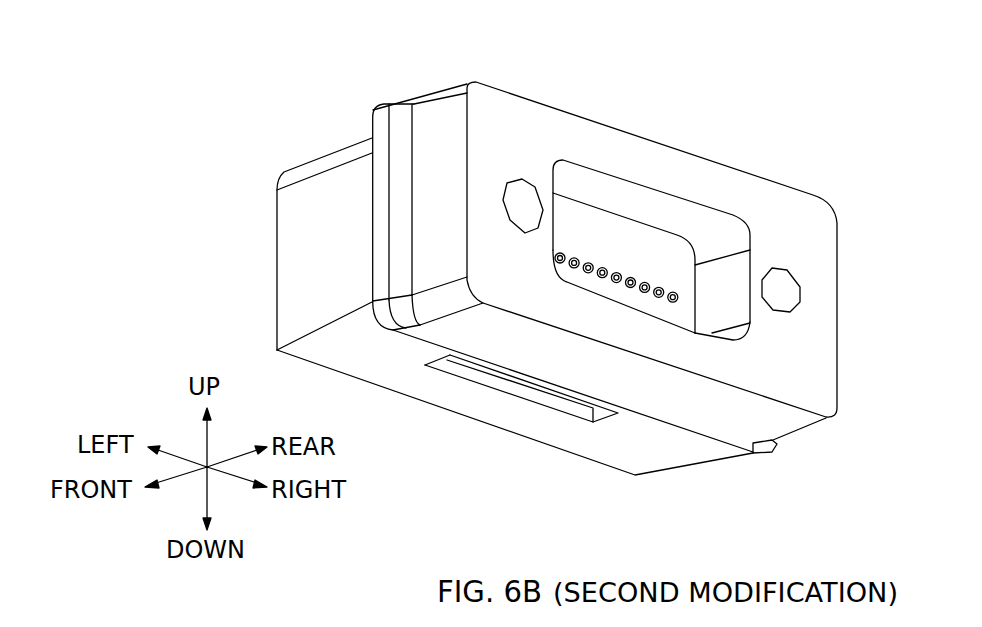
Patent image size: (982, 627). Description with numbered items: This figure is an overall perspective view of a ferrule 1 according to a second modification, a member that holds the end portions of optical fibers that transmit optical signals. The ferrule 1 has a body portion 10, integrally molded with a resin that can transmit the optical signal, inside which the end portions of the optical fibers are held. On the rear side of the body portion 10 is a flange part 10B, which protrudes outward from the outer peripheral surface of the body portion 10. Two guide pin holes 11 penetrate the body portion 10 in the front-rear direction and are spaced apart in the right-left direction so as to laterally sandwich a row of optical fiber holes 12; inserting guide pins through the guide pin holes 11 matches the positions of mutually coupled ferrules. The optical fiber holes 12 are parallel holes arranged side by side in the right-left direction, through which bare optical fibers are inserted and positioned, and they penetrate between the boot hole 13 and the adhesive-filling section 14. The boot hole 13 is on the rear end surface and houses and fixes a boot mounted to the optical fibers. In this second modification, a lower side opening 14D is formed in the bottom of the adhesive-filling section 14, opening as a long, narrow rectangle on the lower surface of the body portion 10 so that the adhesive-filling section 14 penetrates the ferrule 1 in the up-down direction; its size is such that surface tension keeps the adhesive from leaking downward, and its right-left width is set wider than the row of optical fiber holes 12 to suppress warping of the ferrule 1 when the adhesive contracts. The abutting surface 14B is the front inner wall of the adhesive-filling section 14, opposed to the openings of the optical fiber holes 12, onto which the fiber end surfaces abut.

The ferrule 1 is at (673, 104).
The body portion 10 is at (298, 242).
The flange part 10B is at (377, 113).
The guide pin hole 11 is at (787, 293).
The optical fiber hole 12 is at (637, 290).
The boot hole 13 is at (716, 316).
The adhesive-filling section 14 is at (521, 442).
The lower side opening 14D is at (520, 390).
The abutting surface 14B is at (463, 365).